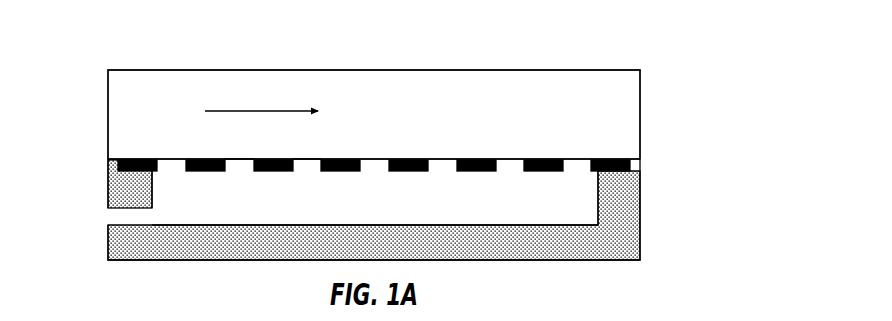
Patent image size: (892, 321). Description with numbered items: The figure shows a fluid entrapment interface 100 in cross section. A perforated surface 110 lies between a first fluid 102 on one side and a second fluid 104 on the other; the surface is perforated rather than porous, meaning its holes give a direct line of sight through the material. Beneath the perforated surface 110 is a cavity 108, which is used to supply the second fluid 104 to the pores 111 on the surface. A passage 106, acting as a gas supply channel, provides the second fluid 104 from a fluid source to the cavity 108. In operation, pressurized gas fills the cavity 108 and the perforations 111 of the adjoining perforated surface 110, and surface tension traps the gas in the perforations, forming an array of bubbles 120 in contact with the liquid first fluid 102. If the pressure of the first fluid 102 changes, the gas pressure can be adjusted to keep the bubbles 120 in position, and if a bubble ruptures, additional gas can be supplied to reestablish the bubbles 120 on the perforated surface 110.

The fluid entrapment interface 100 is at (613, 47).
The first fluid 102 is at (128, 119).
The second fluid 104 is at (583, 195).
The passage 106 is at (115, 217).
The cavity 108 is at (339, 194).
The perforated surface 110 is at (543, 159).
The pores 111 is at (255, 158).
The bubbles 120 is at (309, 162).